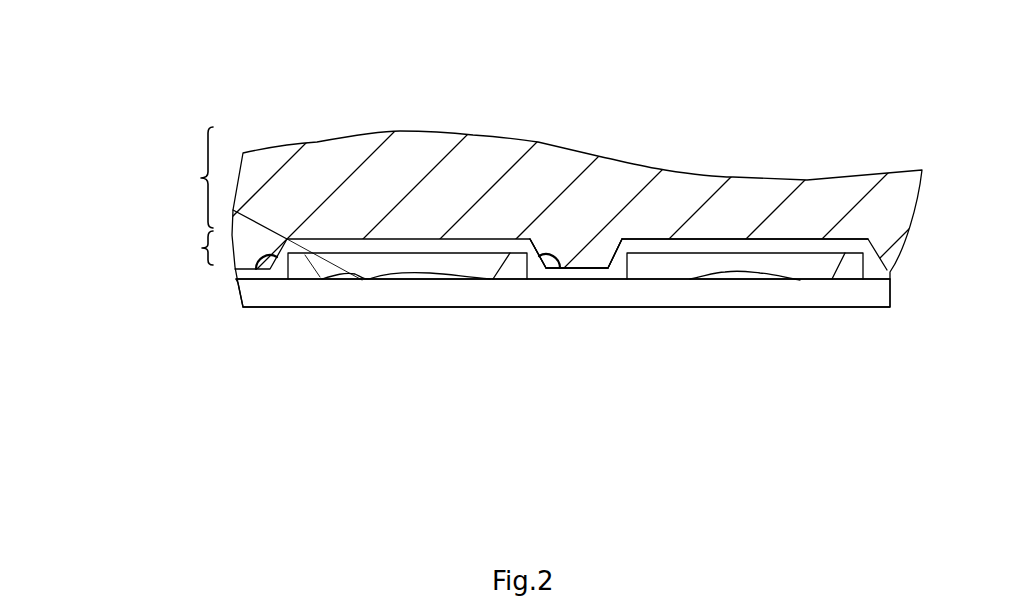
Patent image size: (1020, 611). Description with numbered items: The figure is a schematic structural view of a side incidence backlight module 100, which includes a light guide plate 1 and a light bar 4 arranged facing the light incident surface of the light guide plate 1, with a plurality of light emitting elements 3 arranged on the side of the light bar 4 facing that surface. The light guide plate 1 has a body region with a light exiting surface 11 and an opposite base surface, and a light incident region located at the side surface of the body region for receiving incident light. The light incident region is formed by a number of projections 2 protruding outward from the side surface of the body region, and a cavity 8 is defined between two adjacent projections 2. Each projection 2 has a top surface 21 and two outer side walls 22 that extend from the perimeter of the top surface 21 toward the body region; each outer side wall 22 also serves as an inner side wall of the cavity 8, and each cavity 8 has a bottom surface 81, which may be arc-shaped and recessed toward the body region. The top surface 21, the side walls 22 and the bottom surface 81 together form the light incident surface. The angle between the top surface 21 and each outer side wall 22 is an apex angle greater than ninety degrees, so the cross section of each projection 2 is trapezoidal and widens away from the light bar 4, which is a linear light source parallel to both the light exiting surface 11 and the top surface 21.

The backlight module 100 is at (546, 50).
The light guide plate 1 is at (166, 170).
The light exiting surface 11 is at (303, 195).
The projection 2 is at (695, 465).
The top surface 21 is at (577, 268).
The outer side wall 22 is at (537, 258).
The light emitting element 3 is at (737, 265).
The light bar 4 is at (357, 298).
The cavity 8 is at (657, 247).
The bottom surface 81 is at (810, 238).